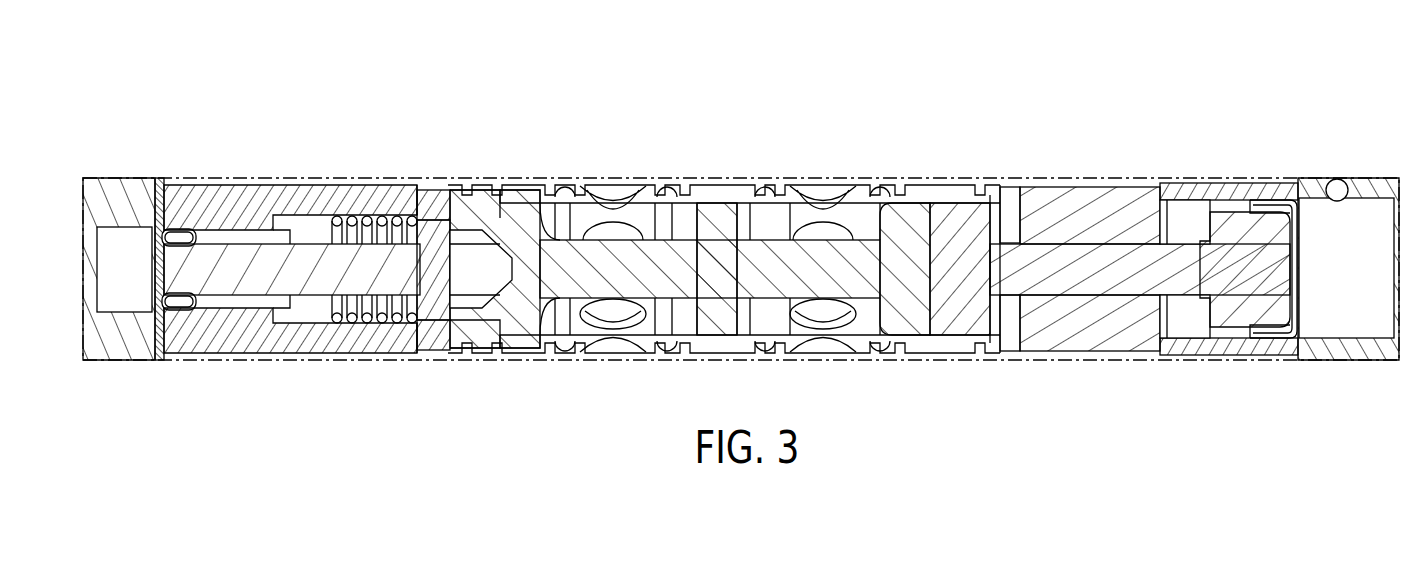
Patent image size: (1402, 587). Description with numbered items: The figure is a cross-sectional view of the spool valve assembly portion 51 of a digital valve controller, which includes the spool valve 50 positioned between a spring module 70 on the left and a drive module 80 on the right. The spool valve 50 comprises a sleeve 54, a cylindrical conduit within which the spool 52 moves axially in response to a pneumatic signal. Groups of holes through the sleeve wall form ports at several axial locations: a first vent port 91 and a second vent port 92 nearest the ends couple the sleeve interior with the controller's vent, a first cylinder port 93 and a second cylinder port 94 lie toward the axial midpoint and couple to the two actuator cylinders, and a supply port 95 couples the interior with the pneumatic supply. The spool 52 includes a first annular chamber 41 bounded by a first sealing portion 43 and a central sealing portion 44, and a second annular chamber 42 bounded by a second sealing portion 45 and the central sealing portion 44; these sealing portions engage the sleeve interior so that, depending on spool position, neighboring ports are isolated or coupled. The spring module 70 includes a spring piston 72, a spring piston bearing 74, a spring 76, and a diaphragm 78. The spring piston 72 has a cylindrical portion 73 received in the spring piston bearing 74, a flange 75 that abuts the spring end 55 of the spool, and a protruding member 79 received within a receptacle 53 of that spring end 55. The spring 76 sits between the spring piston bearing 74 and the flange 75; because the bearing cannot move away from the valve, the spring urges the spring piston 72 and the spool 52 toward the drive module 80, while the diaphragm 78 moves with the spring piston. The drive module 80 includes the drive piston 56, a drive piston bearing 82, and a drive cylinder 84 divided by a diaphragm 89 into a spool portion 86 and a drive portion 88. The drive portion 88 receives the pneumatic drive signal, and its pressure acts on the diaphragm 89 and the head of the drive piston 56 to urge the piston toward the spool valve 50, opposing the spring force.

The first annular chamber 41 is at (610, 228).
The second annular chamber 42 is at (826, 235).
The first sealing portion 43 is at (487, 190).
The central sealing portion 44 is at (721, 222).
The second sealing portion 45 is at (913, 212).
The spool valve 50 is at (657, 165).
The spool valve assembly portion 51 is at (852, 62).
The spool 52 is at (965, 310).
The receptacle 53 is at (484, 327).
The sleeve 54 is at (1013, 193).
The spring end 55 is at (446, 322).
The drive piston 56 is at (1232, 308).
The spring module 70 is at (287, 166).
The spring piston 72 is at (240, 287).
The cylindrical portion 73 is at (203, 229).
The spring piston bearing 74 is at (301, 318).
The flange 75 is at (422, 190).
The spring 76 is at (373, 324).
The diaphragm 78 is at (146, 352).
The protruding member 79 is at (462, 190).
The drive module 80 is at (1096, 160).
The drive piston bearing 82 is at (1072, 333).
The drive cylinder 84 is at (1353, 353).
The spool portion 86 is at (1181, 215).
The drive portion 88 is at (1366, 213).
The diaphragm 89 is at (1295, 197).
The first vent port 91 is at (522, 340).
The second vent port 92 is at (916, 337).
The first cylinder port 93 is at (613, 340).
The second cylinder port 94 is at (826, 345).
The supply port 95 is at (720, 337).